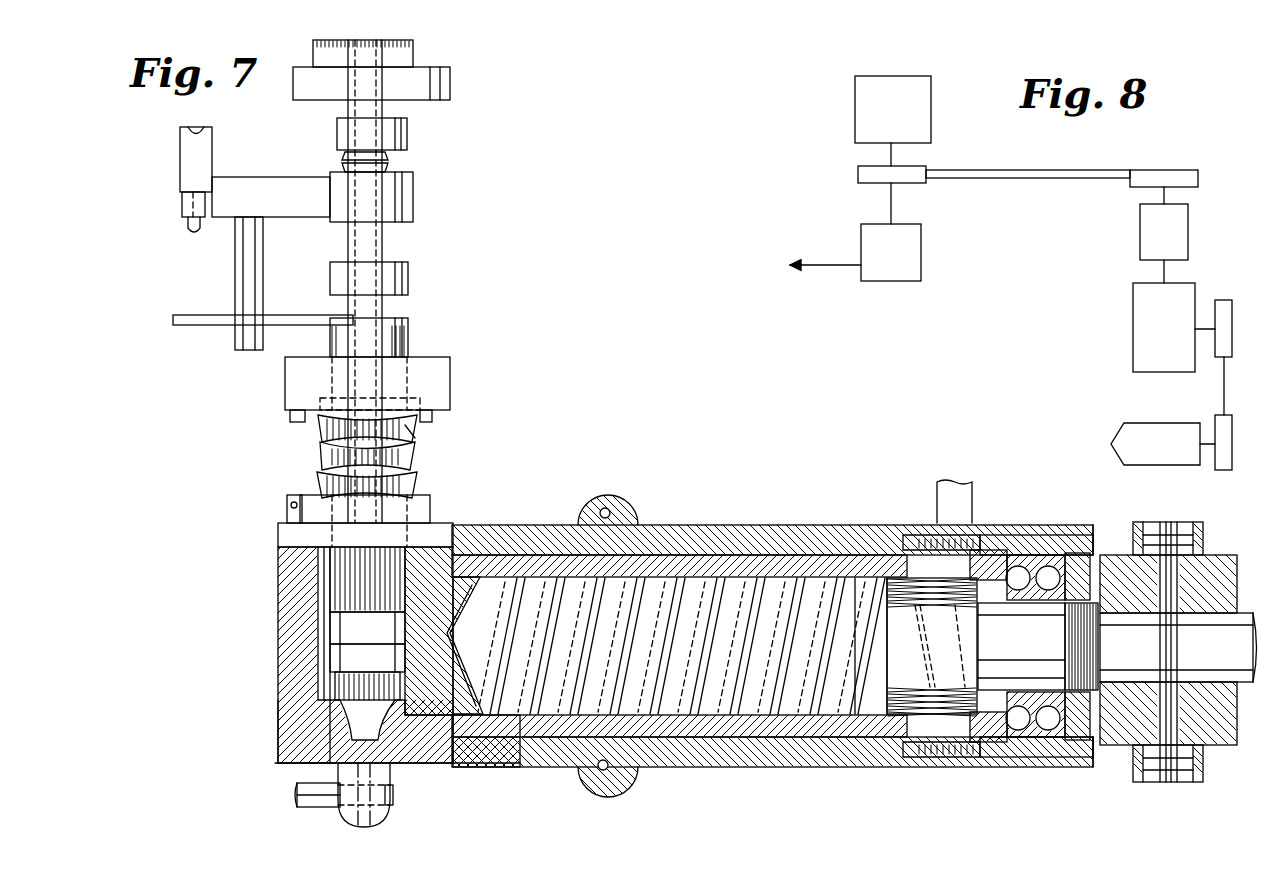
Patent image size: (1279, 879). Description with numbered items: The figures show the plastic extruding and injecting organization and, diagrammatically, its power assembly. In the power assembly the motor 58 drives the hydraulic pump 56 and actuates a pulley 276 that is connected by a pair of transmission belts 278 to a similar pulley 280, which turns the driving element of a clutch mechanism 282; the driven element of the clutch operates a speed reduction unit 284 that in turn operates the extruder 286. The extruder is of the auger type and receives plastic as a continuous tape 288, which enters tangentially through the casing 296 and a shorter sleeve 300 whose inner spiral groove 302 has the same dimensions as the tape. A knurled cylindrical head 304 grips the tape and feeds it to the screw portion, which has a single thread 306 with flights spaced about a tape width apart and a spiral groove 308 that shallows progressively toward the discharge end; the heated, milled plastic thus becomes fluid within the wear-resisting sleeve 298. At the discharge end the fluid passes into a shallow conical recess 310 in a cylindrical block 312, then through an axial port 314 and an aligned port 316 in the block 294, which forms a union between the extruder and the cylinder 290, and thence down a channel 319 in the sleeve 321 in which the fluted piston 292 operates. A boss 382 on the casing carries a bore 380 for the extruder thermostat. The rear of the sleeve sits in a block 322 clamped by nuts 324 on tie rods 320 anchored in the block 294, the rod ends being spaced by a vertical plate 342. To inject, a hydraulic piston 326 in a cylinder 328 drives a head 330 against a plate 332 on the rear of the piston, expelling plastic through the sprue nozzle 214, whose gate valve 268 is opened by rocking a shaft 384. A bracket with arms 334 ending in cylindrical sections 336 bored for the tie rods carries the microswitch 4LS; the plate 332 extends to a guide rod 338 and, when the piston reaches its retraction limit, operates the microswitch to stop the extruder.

In FIG. 7, the microswitch 4LS is at (182, 163).
In FIG. 7, the cylinder 328 is at (413, 45).
In FIG. 7, the vertical plate 342 is at (407, 136).
In FIG. 7, the tie rods 320 is at (390, 162).
In FIG. 7, the arms 334 is at (238, 180).
In FIG. 7, the cylindrical sections 336 is at (330, 198).
In FIG. 7, the hydraulic piston 326 is at (398, 248).
In FIG. 7, the guide rod 338 is at (262, 258).
In FIG. 7, the head 330 is at (408, 280).
In FIG. 7, the plate 332 is at (183, 325).
In FIG. 7, the piston 292 is at (410, 333).
In FIG. 7, the clamping nuts 324 is at (368, 362).
In FIG. 7, the block 322 is at (450, 386).
In FIG. 7, the cylinder 290 is at (417, 430).
In FIG. 7, the sleeve 321 is at (417, 440).
In FIG. 7, the block 294 is at (440, 528).
In FIG. 7, the casing 296 is at (512, 528).
In FIG. 7, the sleeve 298 is at (700, 560).
In FIG. 7, the boss 382 is at (596, 500).
In FIG. 7, the bore 380 is at (612, 511).
In FIG. 7, the extruder 286 is at (690, 522).
In FIG. 8, the extruder 286 is at (1138, 462).
In FIG. 7, the spiral groove 308 is at (765, 578).
In FIG. 7, the thread 306 is at (795, 580).
In FIG. 7, the sleeve 300 is at (858, 570).
In FIG. 7, the spiral groove 302 is at (878, 575).
In FIG. 7, the head 304 is at (905, 742).
In FIG. 7, the tape 288 is at (952, 490).
In FIG. 7, the axial port 314 is at (420, 632).
In FIG. 7, the port 316 is at (420, 650).
In FIG. 7, the conical recess 310 is at (452, 668).
In FIG. 7, the channel 319 is at (367, 686).
In FIG. 7, the cylindrical block 312 is at (475, 738).
In FIG. 7, the sprue nozzle 214 is at (392, 780).
In FIG. 7, the gate valve 268 is at (385, 818).
In FIG. 7, the shaft 384 is at (305, 808).
In FIG. 8, the motor 58 is at (931, 118).
In FIG. 8, the hydraulic pump 56 is at (921, 265).
In FIG. 8, the pulley 276 is at (908, 183).
In FIG. 8, the transmission belts 278 is at (1003, 171).
In FIG. 8, the pulley 280 is at (1174, 171).
In FIG. 8, the clutch mechanism 282 is at (1140, 233).
In FIG. 8, the speed reduction unit 284 is at (1133, 328).